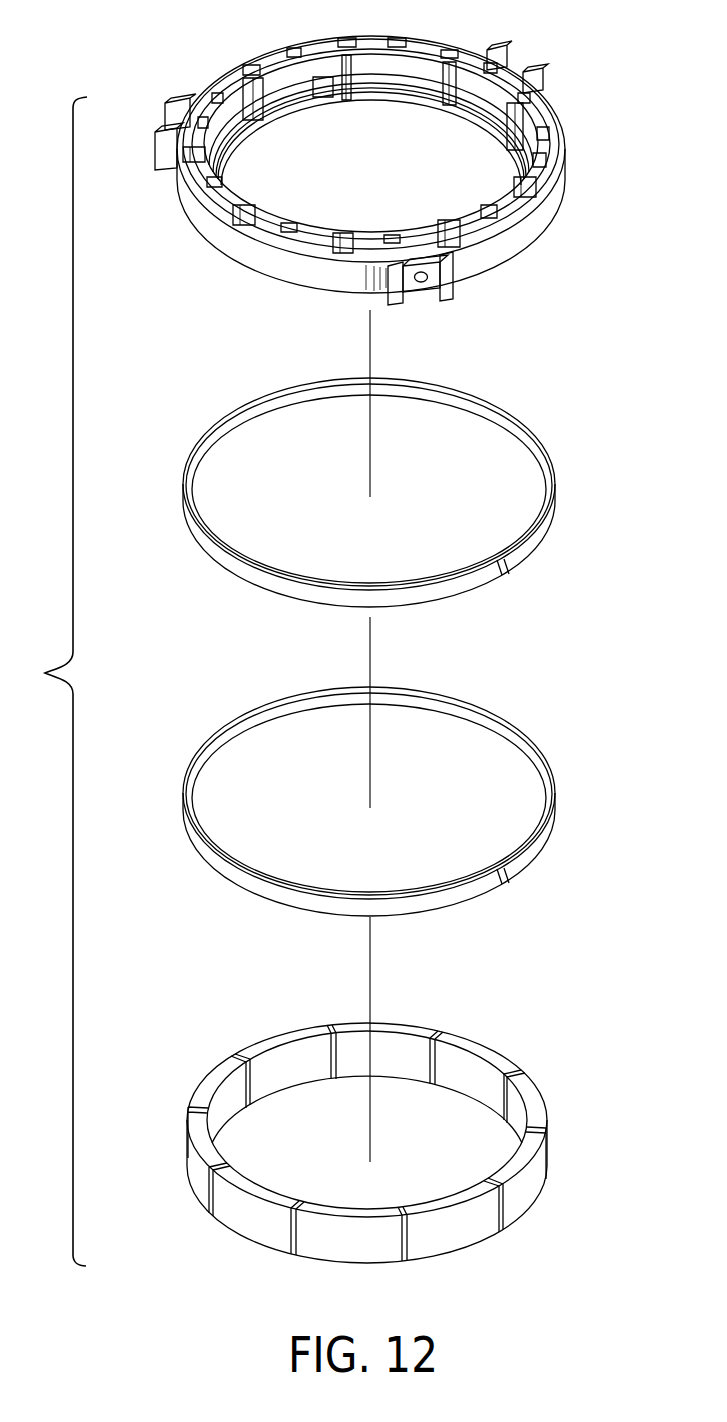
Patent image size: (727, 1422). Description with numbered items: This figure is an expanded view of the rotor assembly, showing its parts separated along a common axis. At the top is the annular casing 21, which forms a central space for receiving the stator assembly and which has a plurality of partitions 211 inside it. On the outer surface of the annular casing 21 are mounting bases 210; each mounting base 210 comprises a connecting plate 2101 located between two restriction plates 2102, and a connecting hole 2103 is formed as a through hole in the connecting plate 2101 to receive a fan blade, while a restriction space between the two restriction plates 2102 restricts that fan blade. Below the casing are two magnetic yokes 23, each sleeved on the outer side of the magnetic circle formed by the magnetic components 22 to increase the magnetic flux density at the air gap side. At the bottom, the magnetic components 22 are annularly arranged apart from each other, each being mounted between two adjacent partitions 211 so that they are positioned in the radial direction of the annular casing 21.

The annular casing 21 is at (124, 61).
The mounting base 210 is at (447, 299).
The connecting plate 2101 is at (425, 289).
The restriction plate 2102 is at (455, 266).
The connecting hole 2103 is at (423, 271).
The partition 211 is at (345, 68).
The magnetic yoke 23 is at (552, 473).
The magnetic component 22 is at (537, 1115).